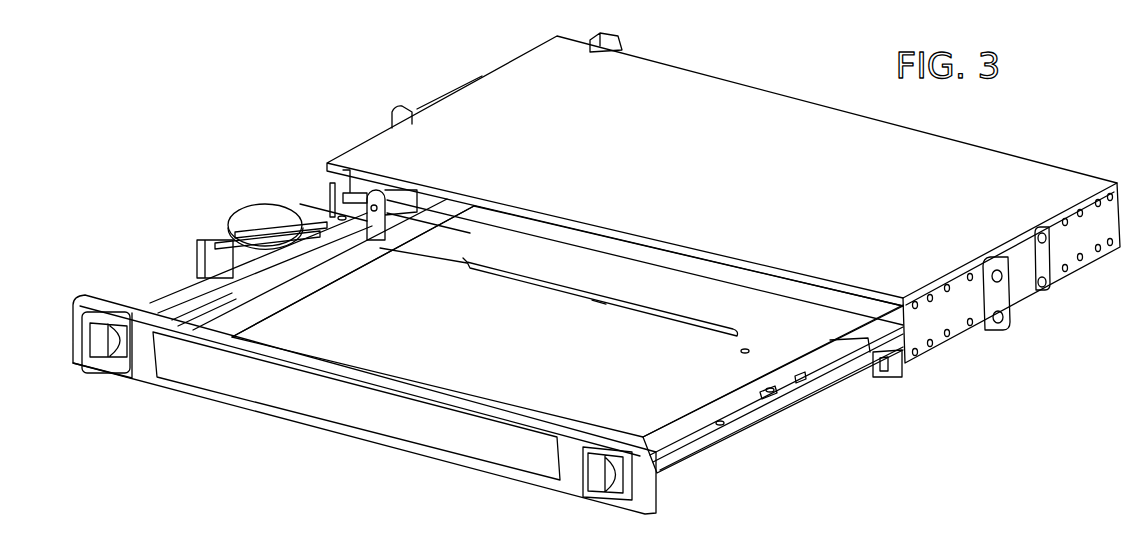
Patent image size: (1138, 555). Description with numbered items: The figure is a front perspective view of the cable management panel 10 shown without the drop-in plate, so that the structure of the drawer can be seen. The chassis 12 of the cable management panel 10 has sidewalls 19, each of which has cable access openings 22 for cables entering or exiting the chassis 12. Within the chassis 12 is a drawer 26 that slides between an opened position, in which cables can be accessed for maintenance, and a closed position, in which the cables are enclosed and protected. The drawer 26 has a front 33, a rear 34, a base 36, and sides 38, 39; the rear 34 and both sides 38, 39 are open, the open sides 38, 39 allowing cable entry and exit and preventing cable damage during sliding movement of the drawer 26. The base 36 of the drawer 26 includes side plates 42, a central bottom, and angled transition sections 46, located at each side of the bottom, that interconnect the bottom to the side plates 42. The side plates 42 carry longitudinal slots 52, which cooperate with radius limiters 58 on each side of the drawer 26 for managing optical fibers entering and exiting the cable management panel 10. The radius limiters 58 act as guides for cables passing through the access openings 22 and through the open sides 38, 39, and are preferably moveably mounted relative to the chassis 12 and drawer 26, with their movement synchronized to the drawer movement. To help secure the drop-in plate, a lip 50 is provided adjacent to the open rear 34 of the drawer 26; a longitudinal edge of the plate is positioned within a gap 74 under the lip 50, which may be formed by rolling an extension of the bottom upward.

The cable management panel 10 is at (224, 138).
The chassis 12 is at (703, 108).
The sidewalls 19 is at (366, 143).
The cable access openings 22 is at (886, 353).
The drawer 26 is at (287, 422).
The front 33 is at (427, 427).
The rear 34 is at (697, 300).
The base 36 is at (498, 358).
The side 38 is at (138, 252).
The side 39 is at (816, 453).
The side plates 42 is at (328, 228).
The angled transition sections 46 is at (287, 288).
The lip 50 is at (540, 278).
The longitudinal slots 52 is at (187, 293).
The radius limiters 58 is at (262, 217).
The gap 74 is at (599, 320).